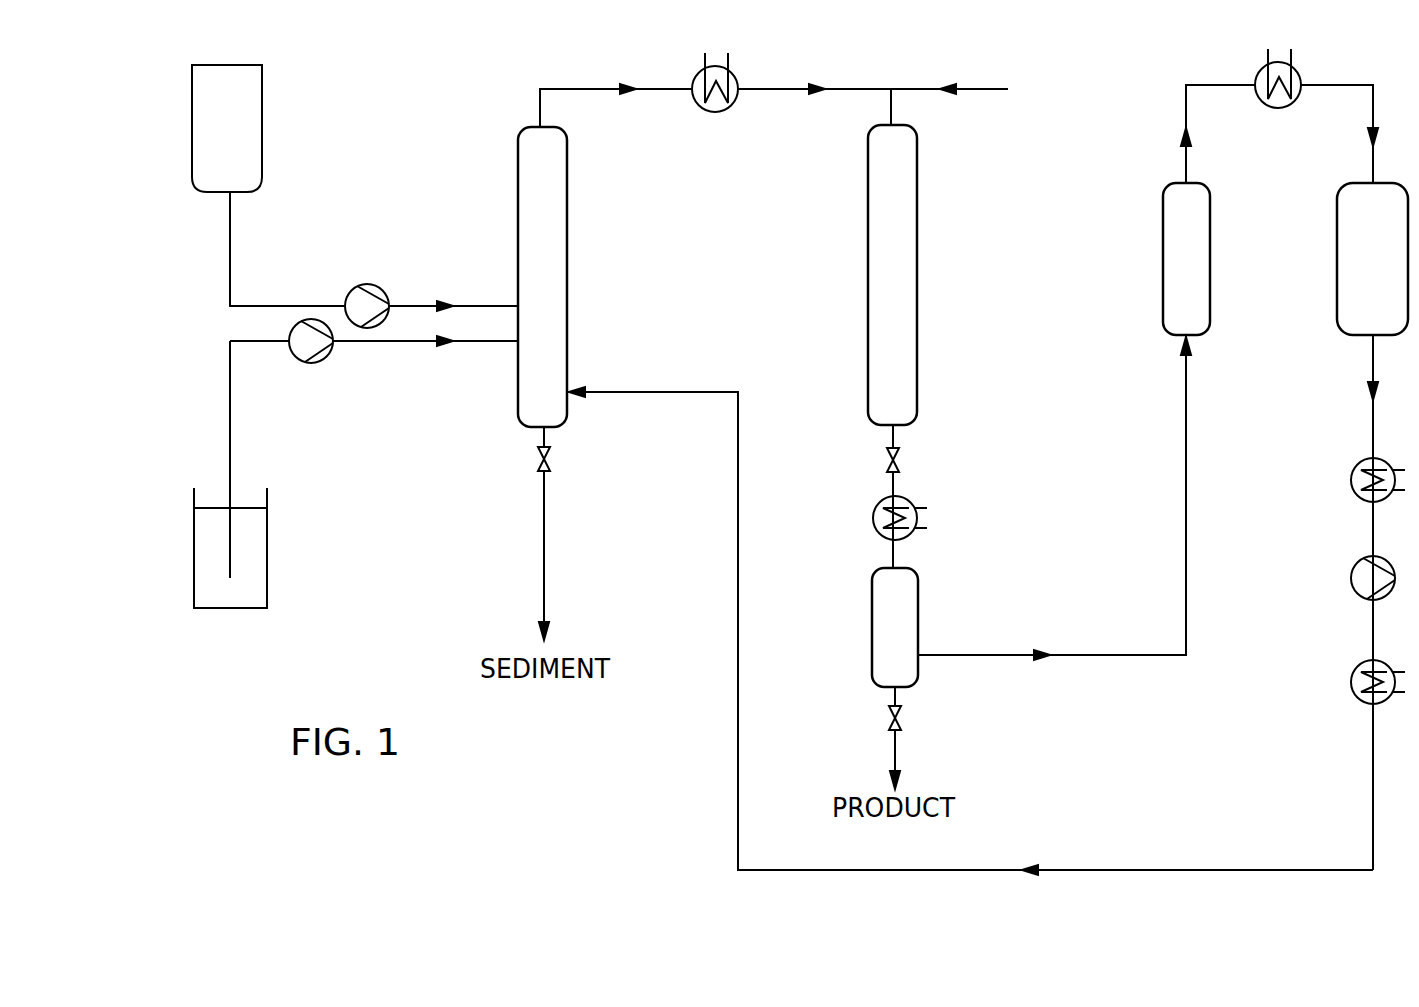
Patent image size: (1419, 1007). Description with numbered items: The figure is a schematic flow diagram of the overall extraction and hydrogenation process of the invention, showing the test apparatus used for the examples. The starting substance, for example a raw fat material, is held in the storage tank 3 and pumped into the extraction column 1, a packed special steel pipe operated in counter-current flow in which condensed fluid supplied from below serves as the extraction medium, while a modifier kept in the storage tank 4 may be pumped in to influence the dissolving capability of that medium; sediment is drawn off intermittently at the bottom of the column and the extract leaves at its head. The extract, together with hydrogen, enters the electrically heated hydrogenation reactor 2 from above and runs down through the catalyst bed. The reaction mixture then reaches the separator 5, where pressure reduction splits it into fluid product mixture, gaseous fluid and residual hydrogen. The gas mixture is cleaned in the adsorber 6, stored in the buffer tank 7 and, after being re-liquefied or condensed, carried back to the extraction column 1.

The extraction column 1 is at (557, 265).
The hydrogenation reactor 2 is at (905, 265).
The storage tank 3 is at (253, 123).
The storage tank 4 is at (260, 540).
The separator 5 is at (912, 616).
The adsorber 6 is at (1202, 260).
The buffer tank 7 is at (1338, 297).